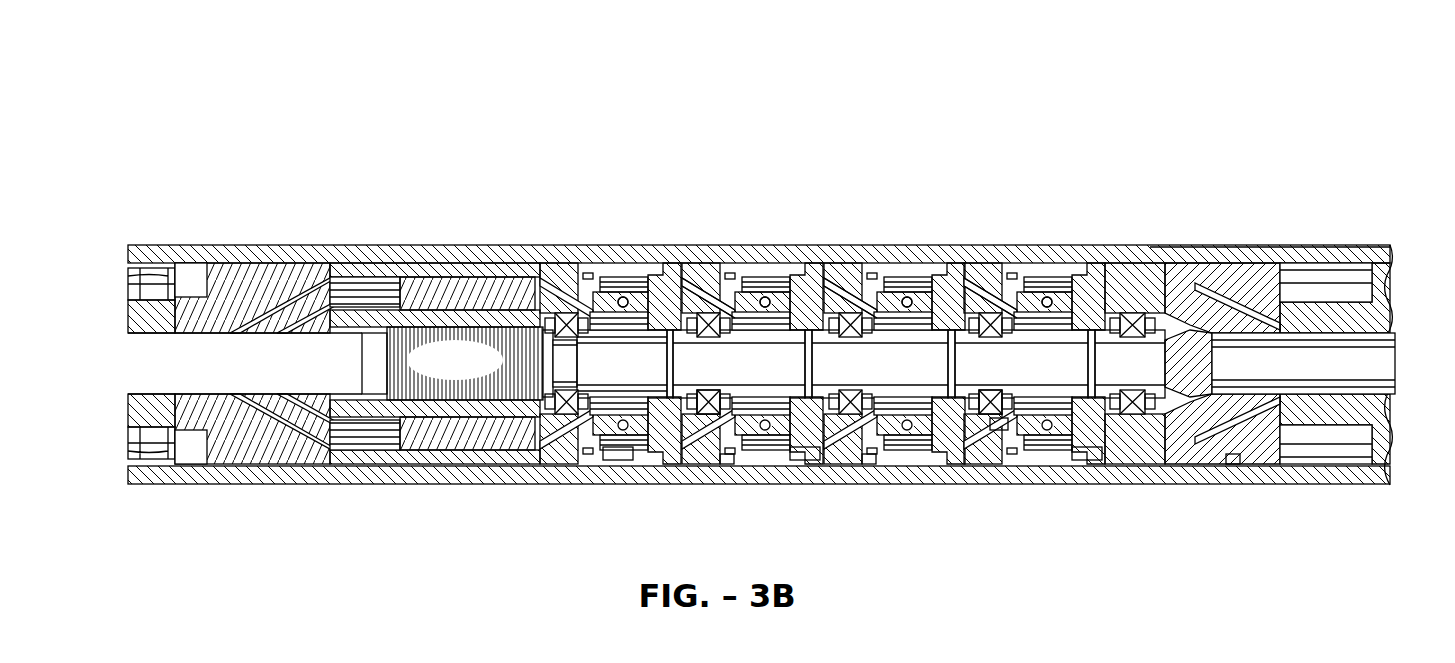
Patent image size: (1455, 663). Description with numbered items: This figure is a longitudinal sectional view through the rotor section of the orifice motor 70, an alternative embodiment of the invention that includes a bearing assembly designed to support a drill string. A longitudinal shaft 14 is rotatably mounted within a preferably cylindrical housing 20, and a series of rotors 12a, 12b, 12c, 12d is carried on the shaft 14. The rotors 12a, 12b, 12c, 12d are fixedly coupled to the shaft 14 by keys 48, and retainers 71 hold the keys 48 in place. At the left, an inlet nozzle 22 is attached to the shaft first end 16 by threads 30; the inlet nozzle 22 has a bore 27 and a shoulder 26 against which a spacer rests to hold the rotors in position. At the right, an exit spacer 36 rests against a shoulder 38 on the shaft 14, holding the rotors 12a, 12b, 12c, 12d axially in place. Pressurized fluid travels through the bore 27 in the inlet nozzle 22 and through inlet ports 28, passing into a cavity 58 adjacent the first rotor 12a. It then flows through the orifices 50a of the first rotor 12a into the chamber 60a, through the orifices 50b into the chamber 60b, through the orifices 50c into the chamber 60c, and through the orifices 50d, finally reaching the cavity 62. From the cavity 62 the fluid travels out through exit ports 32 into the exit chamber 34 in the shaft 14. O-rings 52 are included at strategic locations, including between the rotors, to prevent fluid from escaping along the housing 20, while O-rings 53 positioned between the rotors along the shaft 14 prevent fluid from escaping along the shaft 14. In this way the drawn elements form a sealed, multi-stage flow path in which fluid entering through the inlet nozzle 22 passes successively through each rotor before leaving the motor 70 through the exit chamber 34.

The orifice motor 70 is at (445, 76).
The housing 20 is at (486, 262).
The inlet nozzle 22 is at (210, 262).
The bore 27 is at (176, 468).
The shoulder 26 is at (290, 262).
The inlet ports 28 is at (345, 262).
The cavity 58 is at (490, 432).
The shaft first end 16 is at (376, 362).
The threads 30 is at (497, 336).
The first rotor 12a is at (522, 262).
The second rotor 12b is at (697, 262).
The third rotor 12c is at (842, 262).
The fourth rotor 12d is at (988, 262).
The orifices of first rotor 50a is at (620, 297).
The orifices of second rotor 50b is at (763, 297).
The orifices of third rotor 50c is at (905, 297).
The orifices of fourth rotor 50d is at (1045, 297).
The chamber 60a is at (680, 282).
The chamber 60b is at (824, 282).
The chamber 60c is at (964, 282).
The exit spacer 36 is at (1103, 262).
The keys 48 is at (690, 414).
The O-rings 53 is at (624, 460).
The O-rings 52 is at (727, 466).
The retainers 71 is at (992, 432).
The cavity 62 is at (1158, 290).
The exit ports 32 is at (1198, 300).
The shoulder 38 is at (1268, 262).
The shaft 14 is at (1353, 307).
The exit chamber 34 is at (1360, 376).